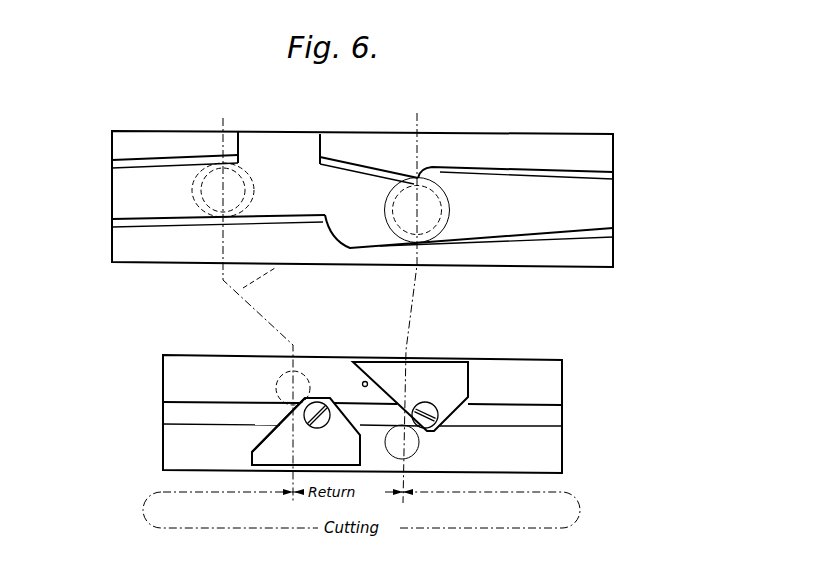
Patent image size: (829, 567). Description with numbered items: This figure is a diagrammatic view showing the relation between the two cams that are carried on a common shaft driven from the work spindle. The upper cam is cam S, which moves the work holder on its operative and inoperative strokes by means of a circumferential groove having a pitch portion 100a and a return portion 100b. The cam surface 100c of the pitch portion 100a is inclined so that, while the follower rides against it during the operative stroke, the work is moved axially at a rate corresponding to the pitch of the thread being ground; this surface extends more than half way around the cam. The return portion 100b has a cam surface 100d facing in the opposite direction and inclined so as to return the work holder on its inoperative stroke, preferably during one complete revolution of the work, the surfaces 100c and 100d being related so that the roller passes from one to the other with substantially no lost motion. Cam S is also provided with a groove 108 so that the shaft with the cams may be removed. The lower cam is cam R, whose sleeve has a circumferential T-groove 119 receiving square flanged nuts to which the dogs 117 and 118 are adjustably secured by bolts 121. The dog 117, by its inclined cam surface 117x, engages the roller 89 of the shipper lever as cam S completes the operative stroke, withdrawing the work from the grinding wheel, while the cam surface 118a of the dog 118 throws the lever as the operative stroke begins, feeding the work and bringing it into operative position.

The pitch portion 100a is at (138, 202).
The groove 108 is at (266, 140).
The cam surface 100d is at (333, 165).
The return portion 100b is at (353, 187).
The cam surface 100c is at (520, 237).
The circumferential T-groove 119 is at (538, 417).
The dog 117 is at (260, 454).
The inclined face of return cam block 117x is at (281, 418).
The roller 89 is at (302, 374).
The dog 118 is at (436, 368).
The cam surface 118a is at (367, 382).
The bolt 121 is at (317, 424).